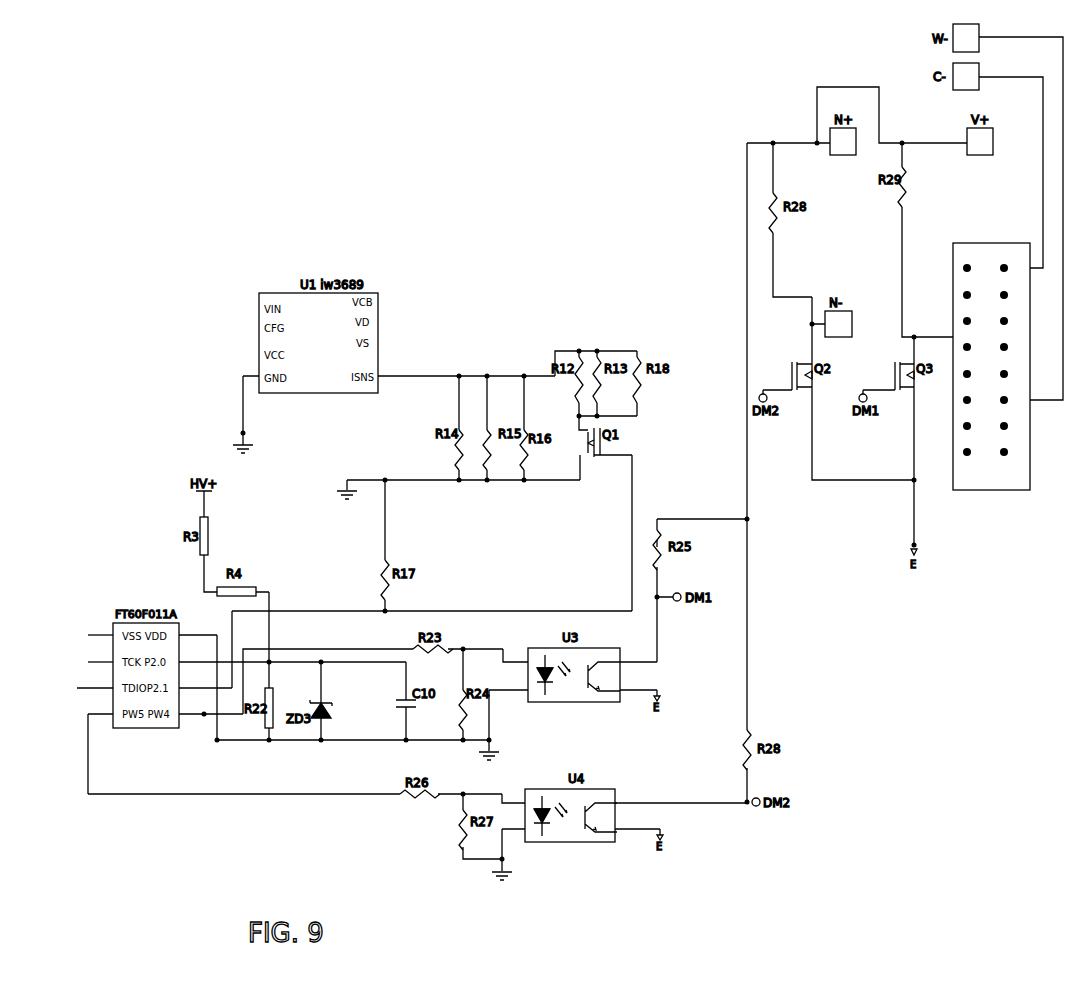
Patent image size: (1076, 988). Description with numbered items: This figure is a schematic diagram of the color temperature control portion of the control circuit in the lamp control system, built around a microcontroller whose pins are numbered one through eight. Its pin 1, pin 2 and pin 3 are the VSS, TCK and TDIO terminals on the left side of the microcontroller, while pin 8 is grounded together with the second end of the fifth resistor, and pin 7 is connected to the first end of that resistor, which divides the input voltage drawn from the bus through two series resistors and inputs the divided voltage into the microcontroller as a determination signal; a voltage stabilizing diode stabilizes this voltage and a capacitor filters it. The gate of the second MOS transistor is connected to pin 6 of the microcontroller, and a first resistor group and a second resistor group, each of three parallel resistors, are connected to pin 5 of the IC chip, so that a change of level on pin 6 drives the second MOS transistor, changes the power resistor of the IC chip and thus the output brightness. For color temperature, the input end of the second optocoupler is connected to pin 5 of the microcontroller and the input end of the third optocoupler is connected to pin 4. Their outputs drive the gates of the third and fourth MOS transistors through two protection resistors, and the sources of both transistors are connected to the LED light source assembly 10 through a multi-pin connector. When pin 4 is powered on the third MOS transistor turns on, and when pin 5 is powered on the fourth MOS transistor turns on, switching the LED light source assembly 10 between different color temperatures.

The LED light source assembly 10 is at (996, 480).
The pin 1 (VSS) of microcontroller FT60F011A 1 is at (100, 629).
The pin 2 (TCK) of microcontroller FT60F011A 2 is at (100, 655).
The pin 3 (TDIO) of microcontroller FT60F011A 3 is at (95, 681).
The pin 4 of the MCU 4 is at (100, 747).
The pin 5 is at (353, 537).
The pin 6 of the MCU 6 is at (282, 508).
The pin 7 of the MCU 7 is at (292, 486).
The pin 8 of the MCU 8 is at (282, 514).